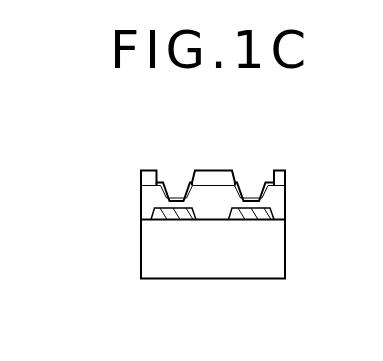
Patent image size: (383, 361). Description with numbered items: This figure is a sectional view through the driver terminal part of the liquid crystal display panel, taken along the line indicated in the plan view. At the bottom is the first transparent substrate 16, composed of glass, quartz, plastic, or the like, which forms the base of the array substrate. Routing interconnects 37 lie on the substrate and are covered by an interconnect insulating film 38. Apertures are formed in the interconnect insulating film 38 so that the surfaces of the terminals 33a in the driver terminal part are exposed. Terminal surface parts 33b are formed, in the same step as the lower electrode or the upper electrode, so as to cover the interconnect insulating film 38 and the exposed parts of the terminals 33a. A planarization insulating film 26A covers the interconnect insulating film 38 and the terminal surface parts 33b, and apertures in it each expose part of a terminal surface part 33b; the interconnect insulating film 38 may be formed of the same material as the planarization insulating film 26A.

The first transparent substrate 16 is at (220, 247).
The planarization insulating film 26A is at (150, 178).
The terminal 33a is at (161, 182).
The terminal surface part 33b is at (251, 192).
The routing interconnect 37 is at (170, 210).
The interconnect insulating film 38 is at (150, 204).